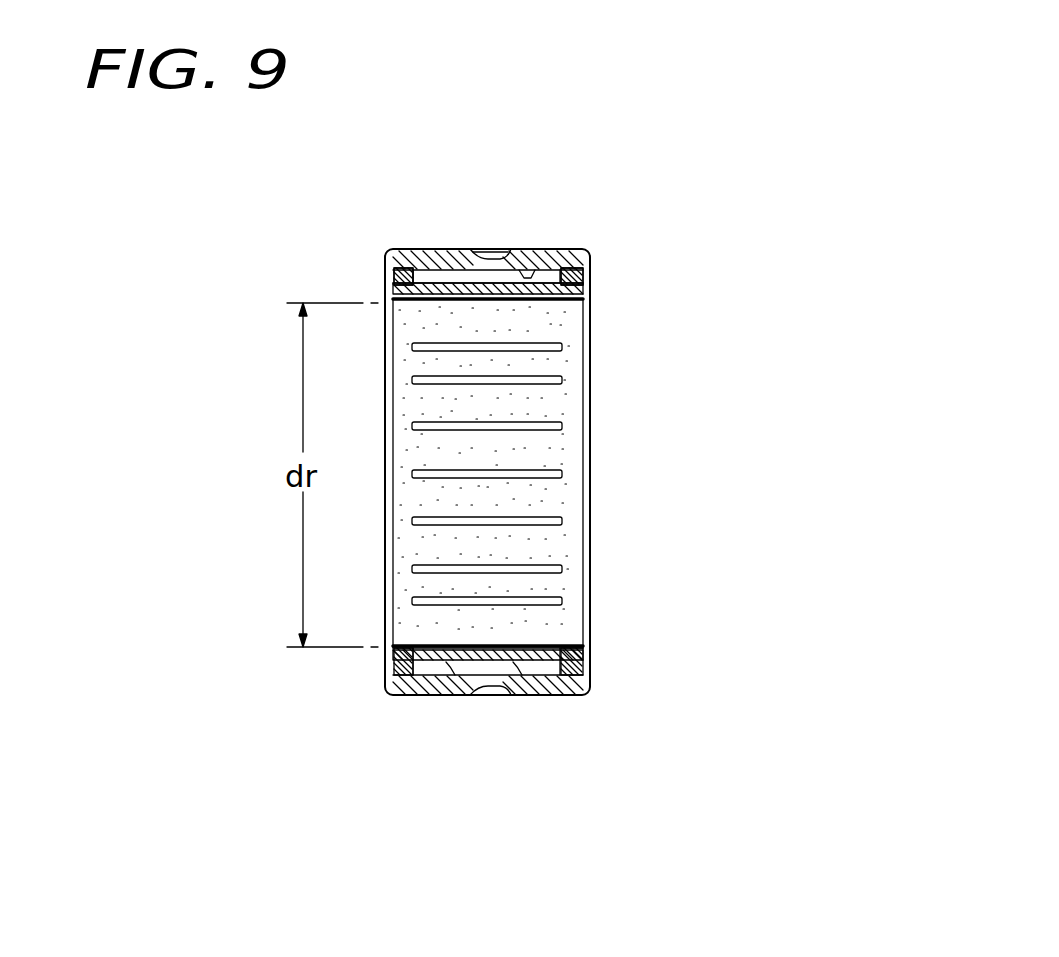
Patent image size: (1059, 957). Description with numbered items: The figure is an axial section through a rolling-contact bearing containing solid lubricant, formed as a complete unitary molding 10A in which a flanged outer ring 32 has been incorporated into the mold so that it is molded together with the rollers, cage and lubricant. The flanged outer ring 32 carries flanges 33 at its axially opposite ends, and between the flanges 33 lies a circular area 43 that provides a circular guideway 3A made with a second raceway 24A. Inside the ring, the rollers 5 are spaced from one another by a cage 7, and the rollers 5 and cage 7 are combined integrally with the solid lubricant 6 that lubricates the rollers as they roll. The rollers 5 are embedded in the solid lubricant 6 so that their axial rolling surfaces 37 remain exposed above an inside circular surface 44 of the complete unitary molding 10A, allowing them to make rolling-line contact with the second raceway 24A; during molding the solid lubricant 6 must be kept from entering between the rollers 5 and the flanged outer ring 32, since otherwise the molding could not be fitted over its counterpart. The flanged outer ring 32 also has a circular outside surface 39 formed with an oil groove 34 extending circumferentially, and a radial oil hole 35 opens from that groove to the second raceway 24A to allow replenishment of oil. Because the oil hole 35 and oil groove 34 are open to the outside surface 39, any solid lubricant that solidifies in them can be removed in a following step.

The complete unitary molding 10A is at (593, 237).
The flanged outer ring 32 is at (412, 249).
The oil hole 35 is at (488, 249).
The circular outside surface 39 is at (528, 249).
The second raceway 24A is at (547, 270).
The circular area 43 is at (462, 249).
The circular guideway 3A is at (488, 276).
The flanges 33 is at (383, 255).
The solid lubricant 6 is at (588, 288).
The cage 7 is at (385, 284).
The rollers 5 is at (443, 249).
The axial rolling surfaces 37 is at (497, 427).
The inside circular surface 44 is at (495, 640).
The oil groove 34 is at (497, 695).